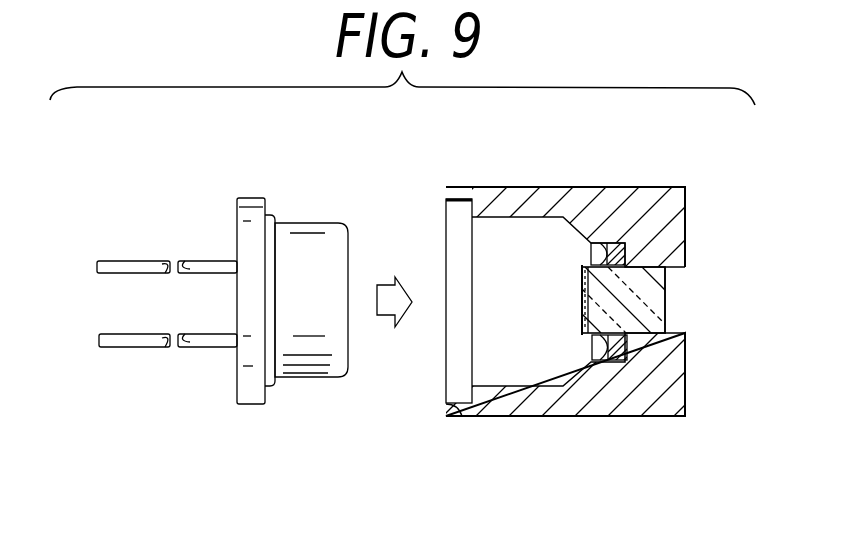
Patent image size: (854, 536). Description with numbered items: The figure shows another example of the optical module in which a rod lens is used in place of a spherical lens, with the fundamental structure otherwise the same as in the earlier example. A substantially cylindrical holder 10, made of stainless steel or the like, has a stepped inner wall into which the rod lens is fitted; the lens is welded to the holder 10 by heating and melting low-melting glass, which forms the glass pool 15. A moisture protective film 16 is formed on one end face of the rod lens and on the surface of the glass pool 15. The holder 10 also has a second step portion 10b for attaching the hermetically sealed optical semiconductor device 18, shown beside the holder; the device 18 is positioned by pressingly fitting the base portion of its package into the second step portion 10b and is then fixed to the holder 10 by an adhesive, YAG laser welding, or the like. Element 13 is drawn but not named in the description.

The holder 10 is at (552, 200).
The second step portion 10b is at (472, 203).
The insulating bushing 13 is at (638, 306).
The glass pool 15 is at (625, 249).
The moisture protective film 16 is at (612, 256).
The optical semiconductor device 18 is at (310, 338).